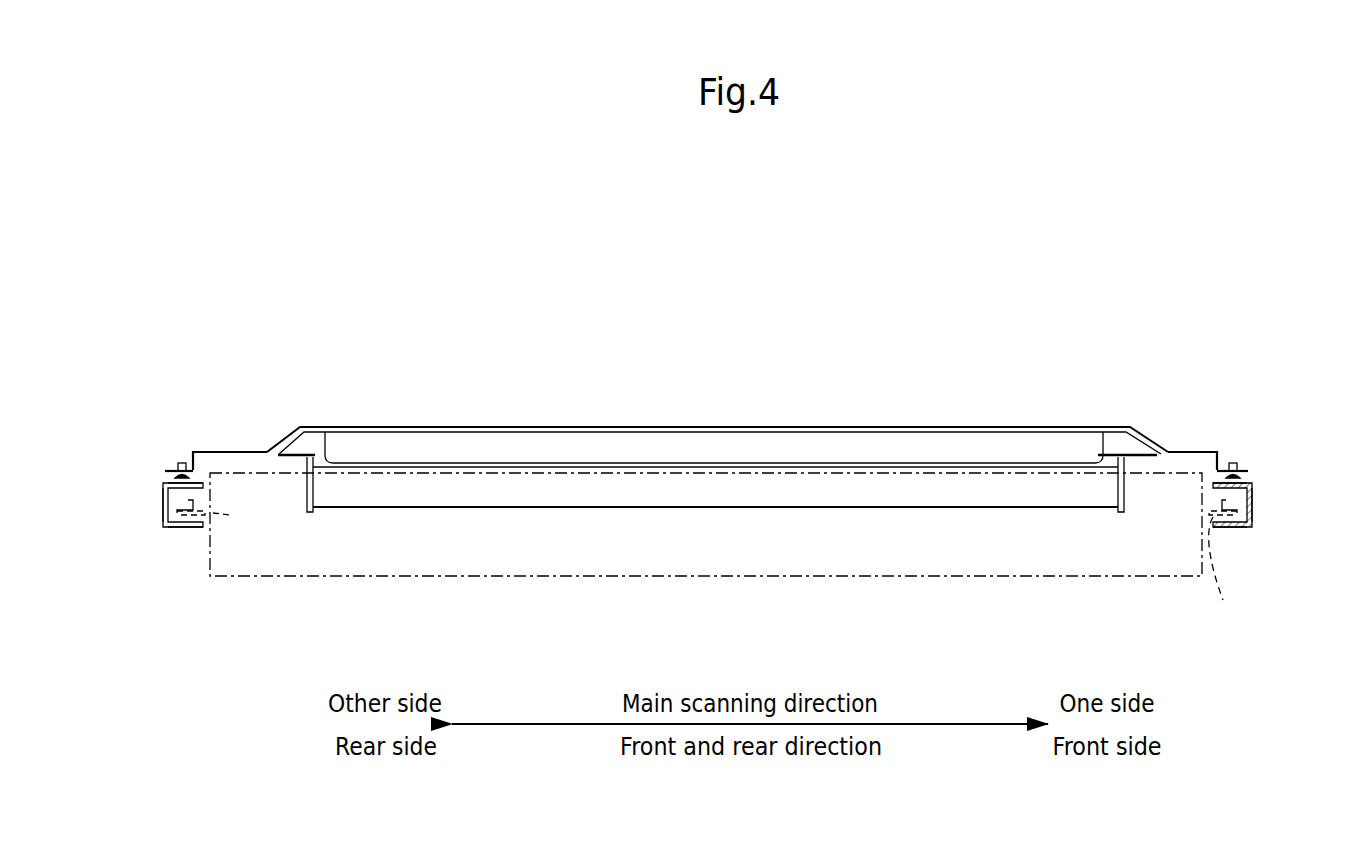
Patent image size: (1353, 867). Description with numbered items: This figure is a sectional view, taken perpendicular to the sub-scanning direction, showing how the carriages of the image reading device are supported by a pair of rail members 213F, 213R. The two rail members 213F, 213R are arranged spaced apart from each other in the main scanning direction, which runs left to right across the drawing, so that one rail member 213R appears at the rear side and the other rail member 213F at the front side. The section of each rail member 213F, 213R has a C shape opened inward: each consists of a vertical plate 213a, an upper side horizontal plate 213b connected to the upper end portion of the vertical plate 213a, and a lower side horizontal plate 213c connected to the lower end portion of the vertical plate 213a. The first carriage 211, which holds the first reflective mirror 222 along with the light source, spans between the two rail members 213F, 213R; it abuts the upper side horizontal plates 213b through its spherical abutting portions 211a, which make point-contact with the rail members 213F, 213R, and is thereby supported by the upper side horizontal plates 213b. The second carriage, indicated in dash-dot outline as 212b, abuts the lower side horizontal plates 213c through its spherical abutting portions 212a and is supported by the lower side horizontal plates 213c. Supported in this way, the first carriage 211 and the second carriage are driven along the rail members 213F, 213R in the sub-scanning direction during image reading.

The first carriage 211 is at (1182, 452).
The spherical abutting portion 211a is at (168, 481).
The spherical abutting portion 212a is at (737, 564).
The lower frame 212b is at (410, 576).
The rail member 213R is at (160, 502).
The rail member 213F is at (1253, 510).
The vertical plate 213a is at (163, 507).
The upper side horizontal plate 213b is at (192, 483).
The lower side horizontal plate 213c is at (183, 527).
The first reflective mirror 222 is at (360, 490).